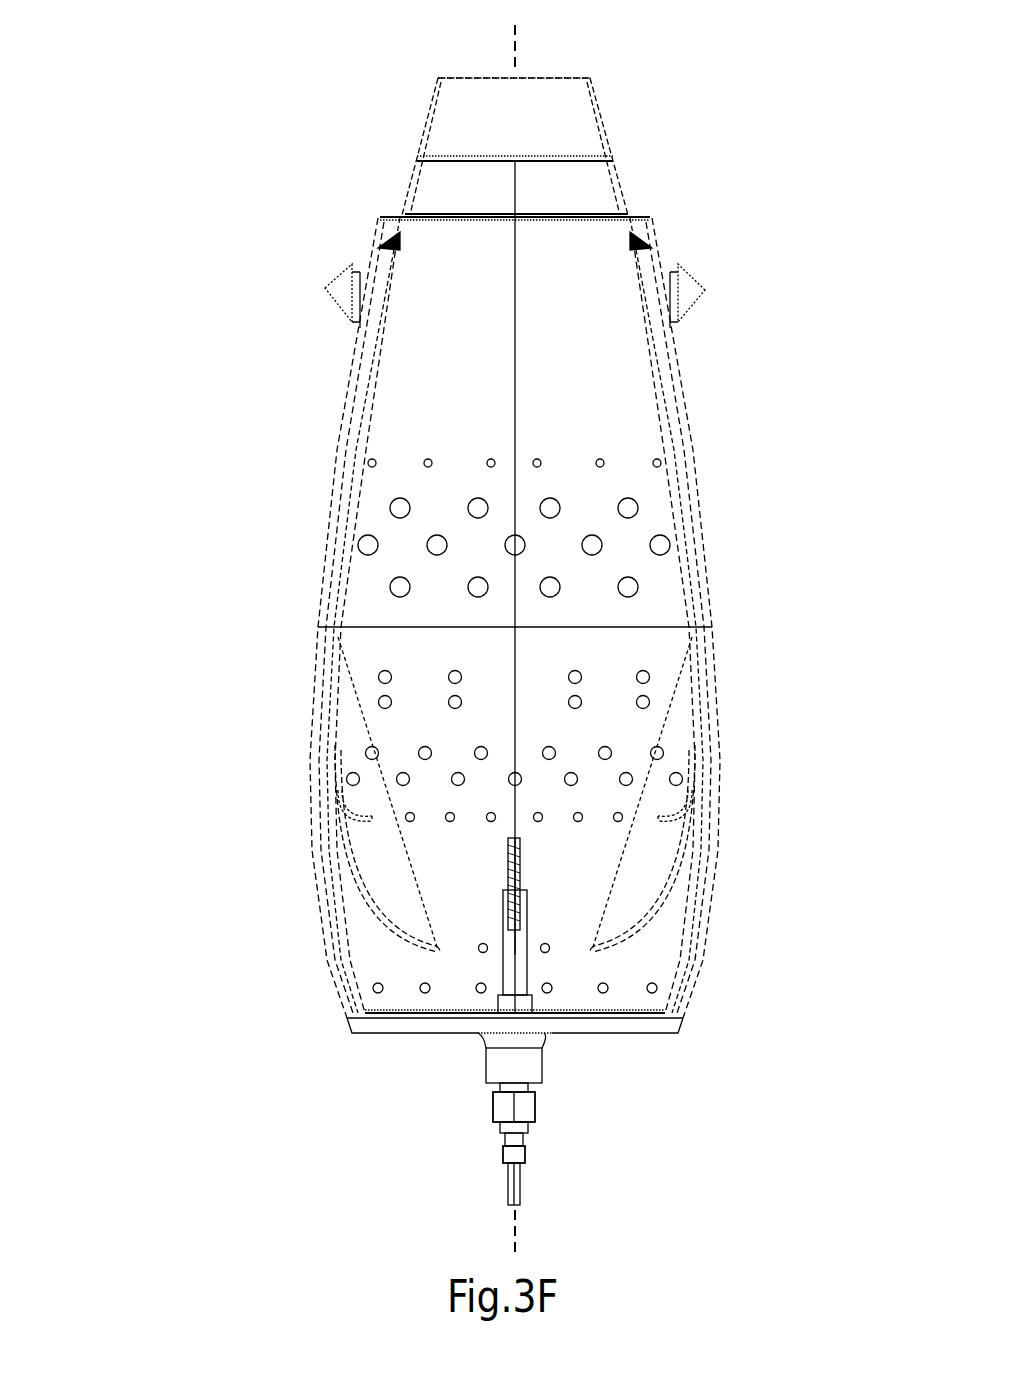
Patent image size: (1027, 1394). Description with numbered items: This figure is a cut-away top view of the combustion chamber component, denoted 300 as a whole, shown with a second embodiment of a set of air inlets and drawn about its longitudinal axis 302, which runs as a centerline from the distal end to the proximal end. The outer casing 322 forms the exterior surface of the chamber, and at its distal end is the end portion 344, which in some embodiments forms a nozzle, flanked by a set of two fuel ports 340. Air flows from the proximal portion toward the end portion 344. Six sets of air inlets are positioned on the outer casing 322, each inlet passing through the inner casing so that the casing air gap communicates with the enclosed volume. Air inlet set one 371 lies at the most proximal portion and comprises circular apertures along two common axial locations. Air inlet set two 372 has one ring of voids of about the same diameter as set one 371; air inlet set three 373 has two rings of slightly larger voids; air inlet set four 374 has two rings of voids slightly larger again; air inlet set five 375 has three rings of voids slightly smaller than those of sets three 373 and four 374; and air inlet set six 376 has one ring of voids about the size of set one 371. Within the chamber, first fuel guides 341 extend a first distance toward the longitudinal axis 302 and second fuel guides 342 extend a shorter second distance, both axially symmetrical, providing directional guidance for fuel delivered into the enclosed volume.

The sensor assembly 300 is at (176, 43).
The central axis 302 is at (510, 46).
The end portion 344 is at (620, 110).
The fuel ports 340 is at (324, 287).
The outer casing 322 is at (396, 387).
The air inlet set six 376 is at (640, 451).
The air inlet set five 375 is at (660, 519).
The air inlet set four 374 is at (660, 675).
The air inlet set three 373 is at (673, 751).
The air inlet set two 372 is at (636, 809).
The air inlet set one 371 is at (660, 967).
The second fuel guides 342 is at (332, 786).
The first fuel guides 341 is at (362, 929).